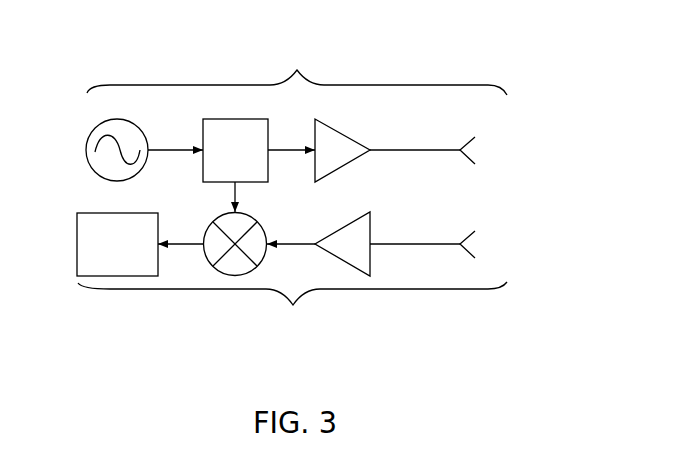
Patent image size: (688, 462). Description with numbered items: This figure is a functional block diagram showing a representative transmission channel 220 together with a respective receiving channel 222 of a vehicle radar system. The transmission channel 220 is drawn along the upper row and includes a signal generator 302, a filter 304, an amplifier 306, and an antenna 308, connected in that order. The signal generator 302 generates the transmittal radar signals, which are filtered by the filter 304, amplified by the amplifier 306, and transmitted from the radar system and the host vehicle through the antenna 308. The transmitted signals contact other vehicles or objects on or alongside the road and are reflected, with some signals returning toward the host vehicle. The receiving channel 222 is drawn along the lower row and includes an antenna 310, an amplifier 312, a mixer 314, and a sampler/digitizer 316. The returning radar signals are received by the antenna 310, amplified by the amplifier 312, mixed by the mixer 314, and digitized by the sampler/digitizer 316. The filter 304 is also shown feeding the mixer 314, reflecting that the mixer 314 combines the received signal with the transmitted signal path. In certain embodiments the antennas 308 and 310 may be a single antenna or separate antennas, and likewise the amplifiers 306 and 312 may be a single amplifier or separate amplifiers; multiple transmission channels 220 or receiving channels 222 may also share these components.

The transmission channel 220 is at (297, 72).
The receiving channel 222 is at (292, 306).
The signal generator 302 is at (86, 150).
The filter 304 is at (233, 118).
The amplifier 306 is at (343, 137).
The antenna 308 is at (463, 160).
The antenna 310 is at (463, 253).
The amplifier 312 is at (372, 221).
The mixer 314 is at (250, 215).
The sampler/digitizer 316 is at (118, 212).